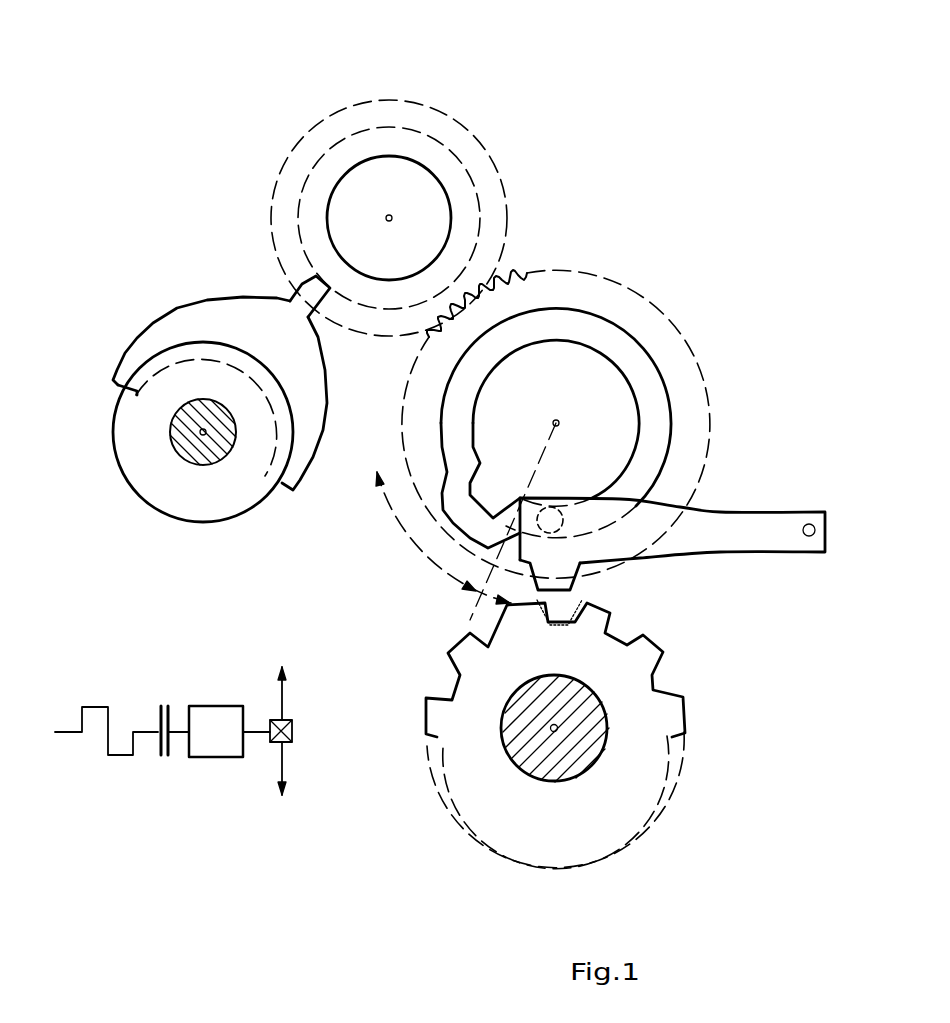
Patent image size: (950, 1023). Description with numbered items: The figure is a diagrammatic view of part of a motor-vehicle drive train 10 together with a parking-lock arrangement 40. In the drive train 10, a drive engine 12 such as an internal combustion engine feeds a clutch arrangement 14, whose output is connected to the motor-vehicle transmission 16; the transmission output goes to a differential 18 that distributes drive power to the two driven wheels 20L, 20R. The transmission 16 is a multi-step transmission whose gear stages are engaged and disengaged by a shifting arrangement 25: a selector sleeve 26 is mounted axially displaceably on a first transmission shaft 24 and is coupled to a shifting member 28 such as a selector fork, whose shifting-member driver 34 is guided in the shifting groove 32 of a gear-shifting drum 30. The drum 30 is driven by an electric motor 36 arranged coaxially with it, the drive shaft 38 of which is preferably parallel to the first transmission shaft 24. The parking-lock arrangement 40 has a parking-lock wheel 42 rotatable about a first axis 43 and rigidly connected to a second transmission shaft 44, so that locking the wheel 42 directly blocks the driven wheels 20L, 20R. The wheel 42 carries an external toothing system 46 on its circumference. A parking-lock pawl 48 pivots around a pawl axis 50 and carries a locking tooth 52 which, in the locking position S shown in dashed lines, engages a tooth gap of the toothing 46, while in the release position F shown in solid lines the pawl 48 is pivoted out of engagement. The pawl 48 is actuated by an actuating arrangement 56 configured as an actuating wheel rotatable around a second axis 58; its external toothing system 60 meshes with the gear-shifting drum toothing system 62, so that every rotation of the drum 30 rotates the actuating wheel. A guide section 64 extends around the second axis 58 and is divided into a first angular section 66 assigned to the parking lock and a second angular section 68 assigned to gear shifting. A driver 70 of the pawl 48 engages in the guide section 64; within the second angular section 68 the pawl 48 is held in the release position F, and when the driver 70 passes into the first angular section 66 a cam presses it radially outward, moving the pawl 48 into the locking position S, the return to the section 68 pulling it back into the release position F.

The drive train 10 is at (216, 792).
The drive engine 12 is at (113, 757).
The clutch arrangement 14 is at (160, 720).
The motor-vehicle transmission 16 is at (216, 760).
The differential 18 is at (293, 728).
The driven wheel 20R is at (284, 696).
The driven wheel 20L is at (283, 767).
The first transmission shaft 24 is at (190, 432).
The shifting arrangement 25 is at (305, 294).
The selector sleeve 26 is at (117, 443).
The shifting member 28 is at (205, 325).
The gear-shifting drum 30 is at (315, 123).
The shifting groove 32 is at (287, 190).
The shifting-member driver 34 is at (292, 287).
The electric motor 36 is at (423, 170).
The drive shaft 38 is at (389, 215).
The parking-lock arrangement 40 is at (580, 511).
The parking-lock wheel 42 is at (563, 807).
The first axis 43 is at (560, 733).
The second transmission shaft 44 is at (523, 747).
The external toothing system 46 is at (660, 690).
The parking-lock pawl 48 is at (717, 525).
The pawl axis 50 is at (802, 538).
The locking tooth 52 is at (590, 580).
The actuating arrangement 56 is at (614, 383).
The second axis 58 is at (597, 424).
The external toothing system 60 is at (518, 267).
The gear-shifting drum toothing system 62 is at (477, 277).
The guide section 64 is at (617, 342).
The first angular section 66 is at (425, 560).
The second angular section 68 is at (383, 507).
The driver 70 is at (552, 506).
The release position F is at (757, 527).
The locking position S is at (580, 620).